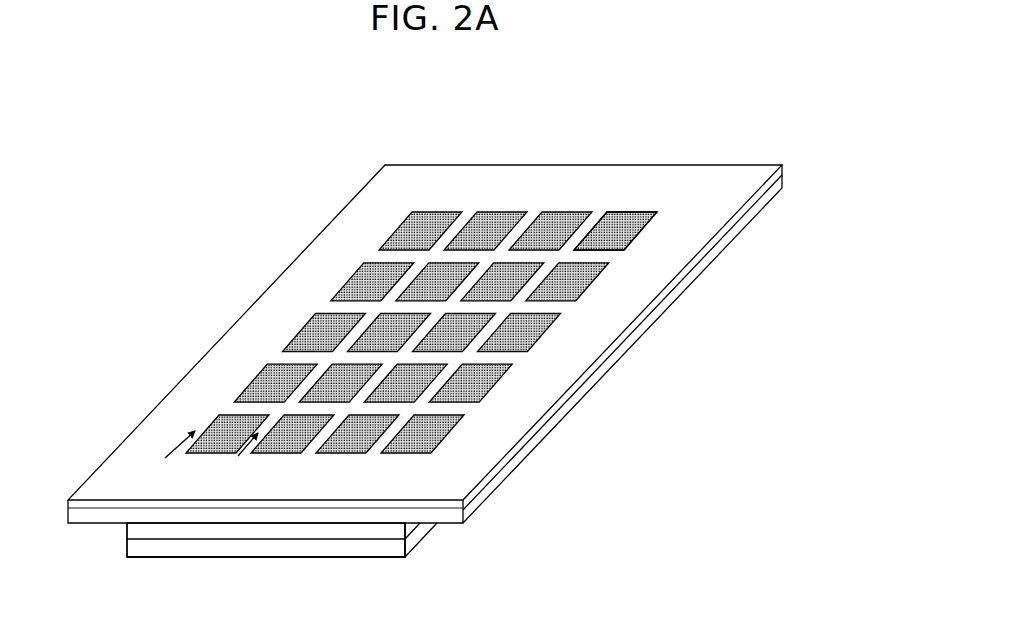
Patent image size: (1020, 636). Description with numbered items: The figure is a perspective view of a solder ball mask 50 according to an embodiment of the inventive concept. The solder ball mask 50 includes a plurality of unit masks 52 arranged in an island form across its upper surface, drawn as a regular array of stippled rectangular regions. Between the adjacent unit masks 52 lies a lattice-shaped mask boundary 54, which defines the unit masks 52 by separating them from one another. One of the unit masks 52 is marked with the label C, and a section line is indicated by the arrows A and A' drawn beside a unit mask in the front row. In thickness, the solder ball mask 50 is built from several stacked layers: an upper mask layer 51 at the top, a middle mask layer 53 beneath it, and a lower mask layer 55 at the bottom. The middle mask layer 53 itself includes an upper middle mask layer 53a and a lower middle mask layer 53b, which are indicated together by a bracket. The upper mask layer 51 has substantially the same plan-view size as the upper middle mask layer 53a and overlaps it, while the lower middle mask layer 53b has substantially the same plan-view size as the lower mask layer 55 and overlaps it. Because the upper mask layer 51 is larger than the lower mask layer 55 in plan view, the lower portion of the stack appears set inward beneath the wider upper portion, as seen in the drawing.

The solder ball mask 50 is at (640, 131).
The upper mask layer 51 is at (457, 503).
The unit masks 52 is at (540, 333).
The middle mask layer 53 is at (583, 528).
The upper middle mask layer 53a is at (458, 517).
The lower middle mask layer 53b is at (435, 532).
The mask boundary 54 is at (598, 256).
The lower mask layer 55 is at (415, 548).
The unit cell C is at (312, 313).
The section line start A is at (173, 457).
The section line end A' is at (241, 458).